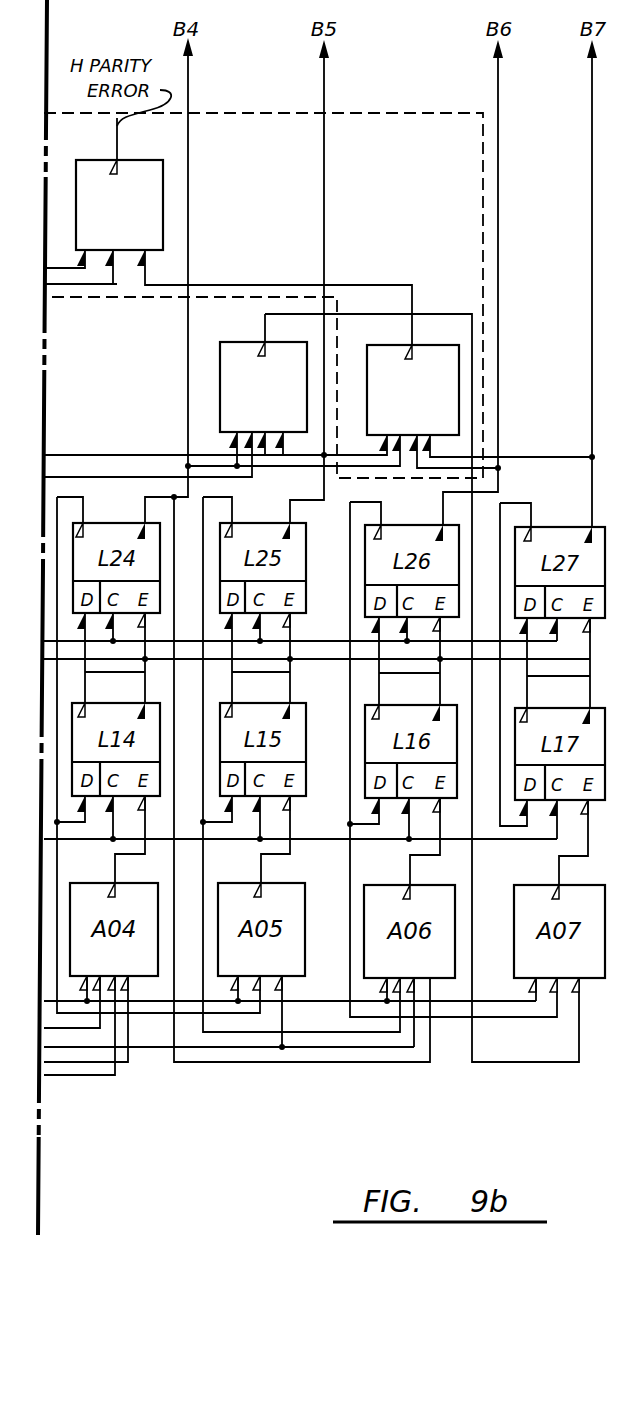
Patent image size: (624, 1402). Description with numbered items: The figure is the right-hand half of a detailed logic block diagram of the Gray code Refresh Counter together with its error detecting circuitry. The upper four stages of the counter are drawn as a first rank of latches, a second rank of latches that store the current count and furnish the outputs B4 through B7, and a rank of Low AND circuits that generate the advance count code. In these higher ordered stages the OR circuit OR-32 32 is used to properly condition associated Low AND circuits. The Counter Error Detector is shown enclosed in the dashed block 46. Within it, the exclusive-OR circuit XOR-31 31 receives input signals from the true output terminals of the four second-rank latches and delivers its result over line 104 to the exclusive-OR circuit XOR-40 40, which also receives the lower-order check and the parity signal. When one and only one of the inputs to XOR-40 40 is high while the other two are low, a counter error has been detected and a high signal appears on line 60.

The error indication line 60 is at (114, 128).
The dashed block enclosing the Counter Error Detector 46 is at (408, 113).
The output line of XOR-31 104 is at (367, 285).
The XOR-40 exclusive-OR circuit 40 is at (119, 213).
The OR-32 circuit 32 is at (263, 395).
The XOR-31 exclusive-OR circuit 31 is at (413, 398).